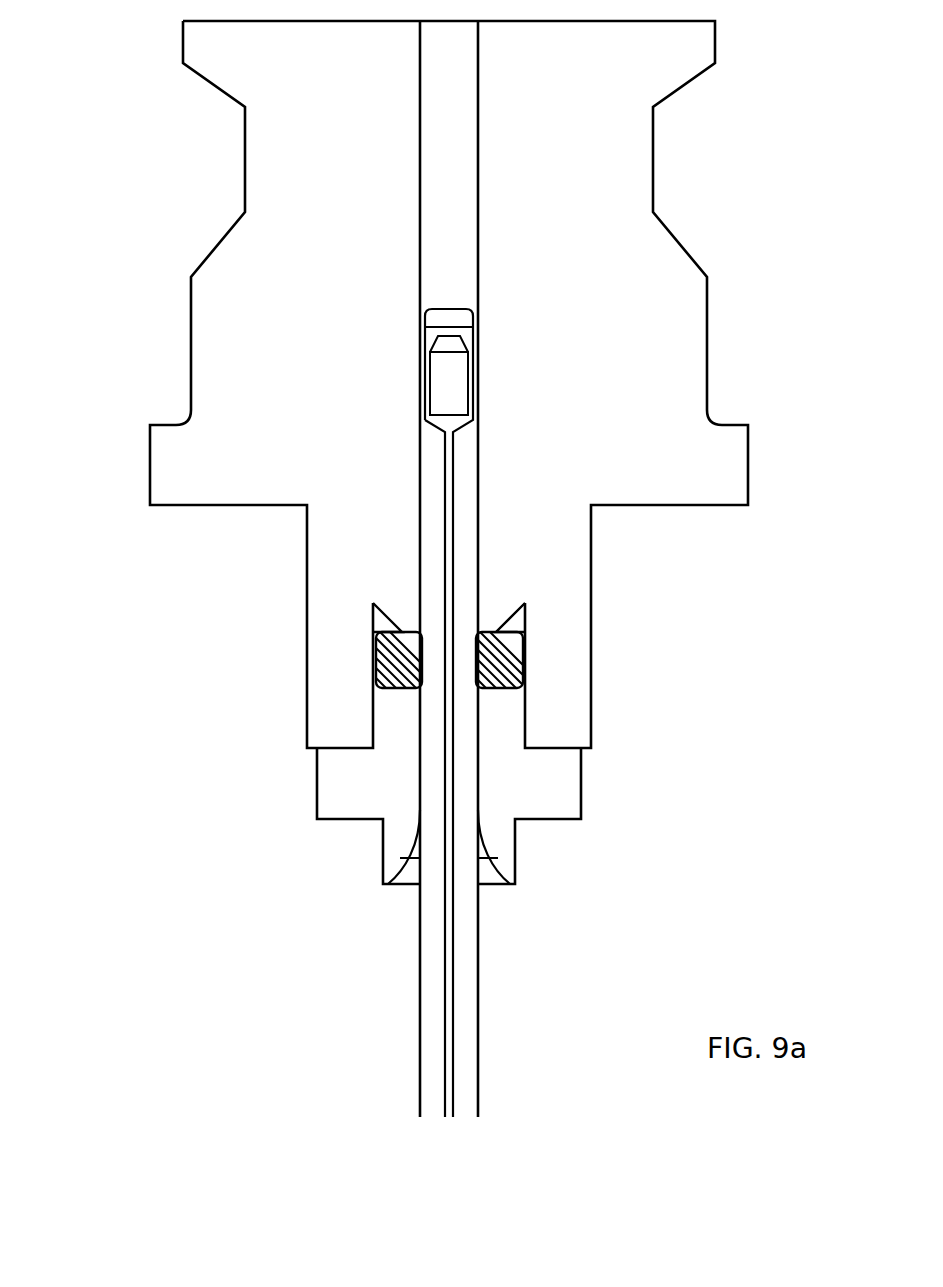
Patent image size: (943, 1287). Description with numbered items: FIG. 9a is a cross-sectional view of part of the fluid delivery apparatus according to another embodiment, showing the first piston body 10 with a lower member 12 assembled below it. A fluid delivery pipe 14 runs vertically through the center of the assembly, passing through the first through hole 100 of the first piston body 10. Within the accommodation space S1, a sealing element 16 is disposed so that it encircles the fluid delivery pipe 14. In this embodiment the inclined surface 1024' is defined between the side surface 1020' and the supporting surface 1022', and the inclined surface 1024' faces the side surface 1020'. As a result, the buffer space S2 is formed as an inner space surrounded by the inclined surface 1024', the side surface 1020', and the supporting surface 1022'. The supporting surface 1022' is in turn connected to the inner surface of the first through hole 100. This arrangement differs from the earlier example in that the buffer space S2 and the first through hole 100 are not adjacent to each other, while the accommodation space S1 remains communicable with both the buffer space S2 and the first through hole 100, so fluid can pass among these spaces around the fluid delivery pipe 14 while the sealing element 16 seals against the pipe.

The first piston body 10 is at (190, 378).
The lower nut 12 is at (316, 788).
The fluid delivery pipe 14 is at (423, 950).
The sealing element 16 is at (376, 672).
The first through hole 100 is at (433, 228).
The accommodation space S1 is at (378, 624).
The buffer space S2 is at (382, 622).
The side surface 1020' is at (637, 622).
The supporting surface 1022' is at (532, 525).
The inclined surface 1024' is at (564, 535).